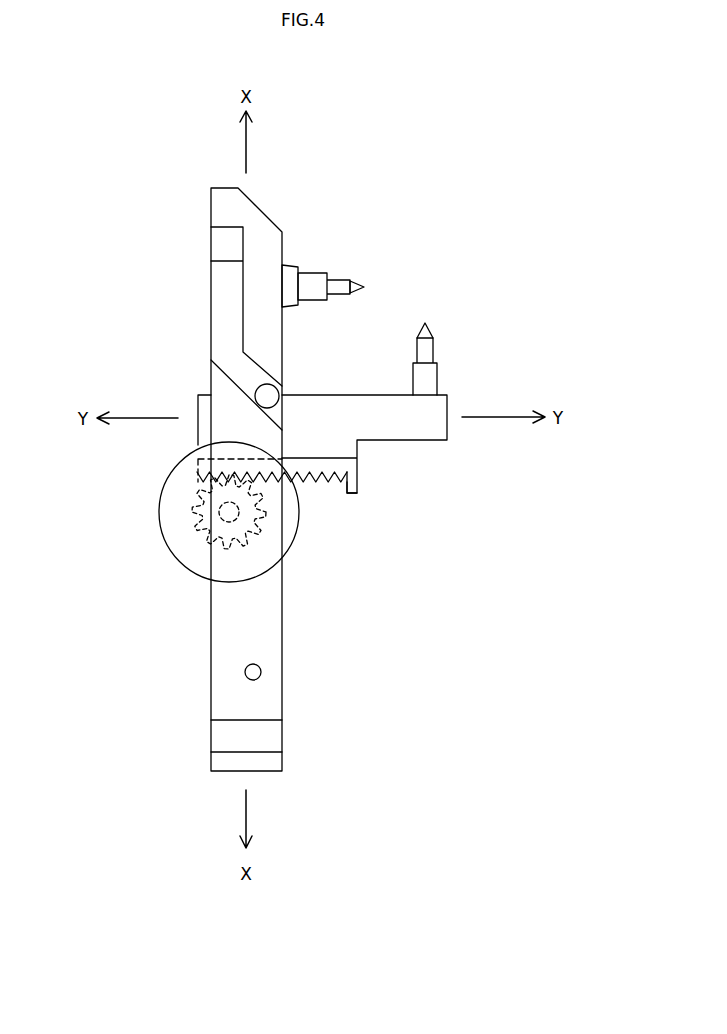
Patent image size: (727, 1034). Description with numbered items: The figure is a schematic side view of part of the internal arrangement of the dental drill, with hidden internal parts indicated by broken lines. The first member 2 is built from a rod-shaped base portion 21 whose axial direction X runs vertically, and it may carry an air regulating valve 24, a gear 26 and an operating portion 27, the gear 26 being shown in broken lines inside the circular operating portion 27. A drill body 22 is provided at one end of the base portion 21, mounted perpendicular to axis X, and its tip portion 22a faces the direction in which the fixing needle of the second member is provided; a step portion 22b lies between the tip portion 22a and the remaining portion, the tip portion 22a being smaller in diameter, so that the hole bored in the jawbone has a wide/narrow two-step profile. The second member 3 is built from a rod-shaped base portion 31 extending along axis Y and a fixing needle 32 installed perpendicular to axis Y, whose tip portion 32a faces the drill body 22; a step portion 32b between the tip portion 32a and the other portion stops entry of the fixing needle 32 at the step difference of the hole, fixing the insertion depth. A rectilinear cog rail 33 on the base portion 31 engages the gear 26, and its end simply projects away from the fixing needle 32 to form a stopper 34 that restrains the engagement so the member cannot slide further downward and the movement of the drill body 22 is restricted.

The first member 2 is at (244, 479).
The base portion 21 is at (218, 655).
The drill body 22 is at (363, 249).
The tip portion 22a is at (356, 287).
The step portion 22b is at (352, 281).
The air regulating valve 24 is at (261, 672).
The gear 26 is at (245, 528).
The operating portion 27 is at (183, 540).
The second member 3 is at (337, 414).
The base portion 31 is at (205, 398).
The fixing needle 32 is at (490, 338).
The tip portion 32a is at (427, 326).
The step portion 32b is at (433, 330).
The cog rail 33 is at (344, 480).
The stopper 34 is at (360, 480).